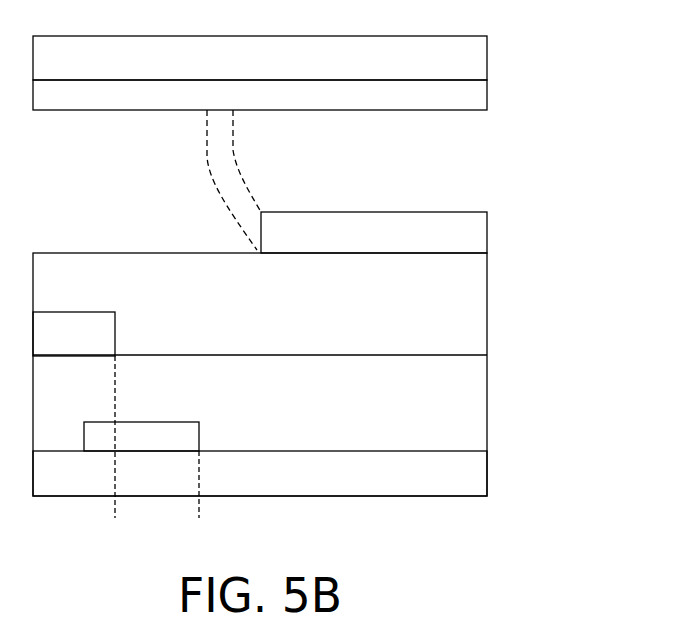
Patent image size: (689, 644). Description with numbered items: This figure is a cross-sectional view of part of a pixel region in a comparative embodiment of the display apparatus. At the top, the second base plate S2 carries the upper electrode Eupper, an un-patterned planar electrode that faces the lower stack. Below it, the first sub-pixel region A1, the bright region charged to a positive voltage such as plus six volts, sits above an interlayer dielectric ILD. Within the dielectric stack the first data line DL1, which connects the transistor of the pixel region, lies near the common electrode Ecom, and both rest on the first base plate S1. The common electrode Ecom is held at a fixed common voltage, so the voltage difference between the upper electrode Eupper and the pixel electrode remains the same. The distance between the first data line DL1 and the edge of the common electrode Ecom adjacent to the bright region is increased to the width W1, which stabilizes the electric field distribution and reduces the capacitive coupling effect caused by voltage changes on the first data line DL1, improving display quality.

The second base plate S2 is at (472, 62).
The upper electrode Eupper is at (472, 98).
The first sub-pixel region A1 is at (374, 232).
The interlayer dielectric ILD is at (272, 322).
The first data line DL1 is at (98, 345).
The first base plate S1 is at (472, 473).
The common electrode Ecom is at (102, 438).
The width of the first portion of the common electrode W1 is at (199, 508).